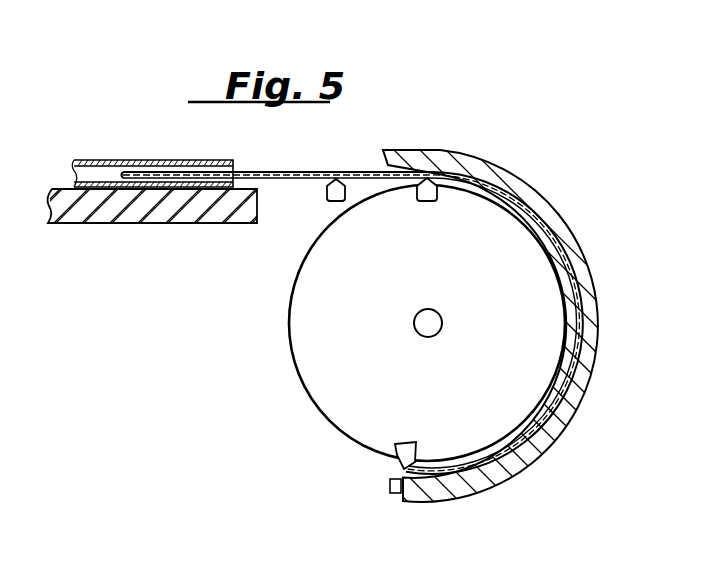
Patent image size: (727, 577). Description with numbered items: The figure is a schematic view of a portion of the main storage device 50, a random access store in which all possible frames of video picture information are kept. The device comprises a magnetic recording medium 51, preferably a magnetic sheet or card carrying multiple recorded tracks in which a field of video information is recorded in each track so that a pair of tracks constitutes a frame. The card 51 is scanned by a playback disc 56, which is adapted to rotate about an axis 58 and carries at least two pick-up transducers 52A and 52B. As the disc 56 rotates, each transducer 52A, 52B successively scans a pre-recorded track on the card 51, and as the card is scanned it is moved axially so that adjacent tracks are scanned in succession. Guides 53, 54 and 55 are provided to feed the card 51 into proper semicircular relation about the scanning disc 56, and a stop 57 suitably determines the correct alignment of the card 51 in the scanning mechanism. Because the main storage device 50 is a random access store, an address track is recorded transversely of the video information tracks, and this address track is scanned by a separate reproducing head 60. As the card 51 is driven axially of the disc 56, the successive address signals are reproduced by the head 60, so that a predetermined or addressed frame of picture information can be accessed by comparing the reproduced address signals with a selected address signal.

The main storage device 50 is at (332, 152).
The magnetic recording medium 51 is at (274, 178).
The pick-up transducer 52A is at (452, 168).
The pick-up transducer 52B is at (396, 454).
The guide 53 is at (110, 160).
The guide 54 is at (186, 223).
The guide 55 is at (586, 251).
The playback disc 56 is at (307, 393).
The stop 57 is at (398, 498).
The axis 58 is at (413, 330).
The reproducing head 60 is at (327, 197).